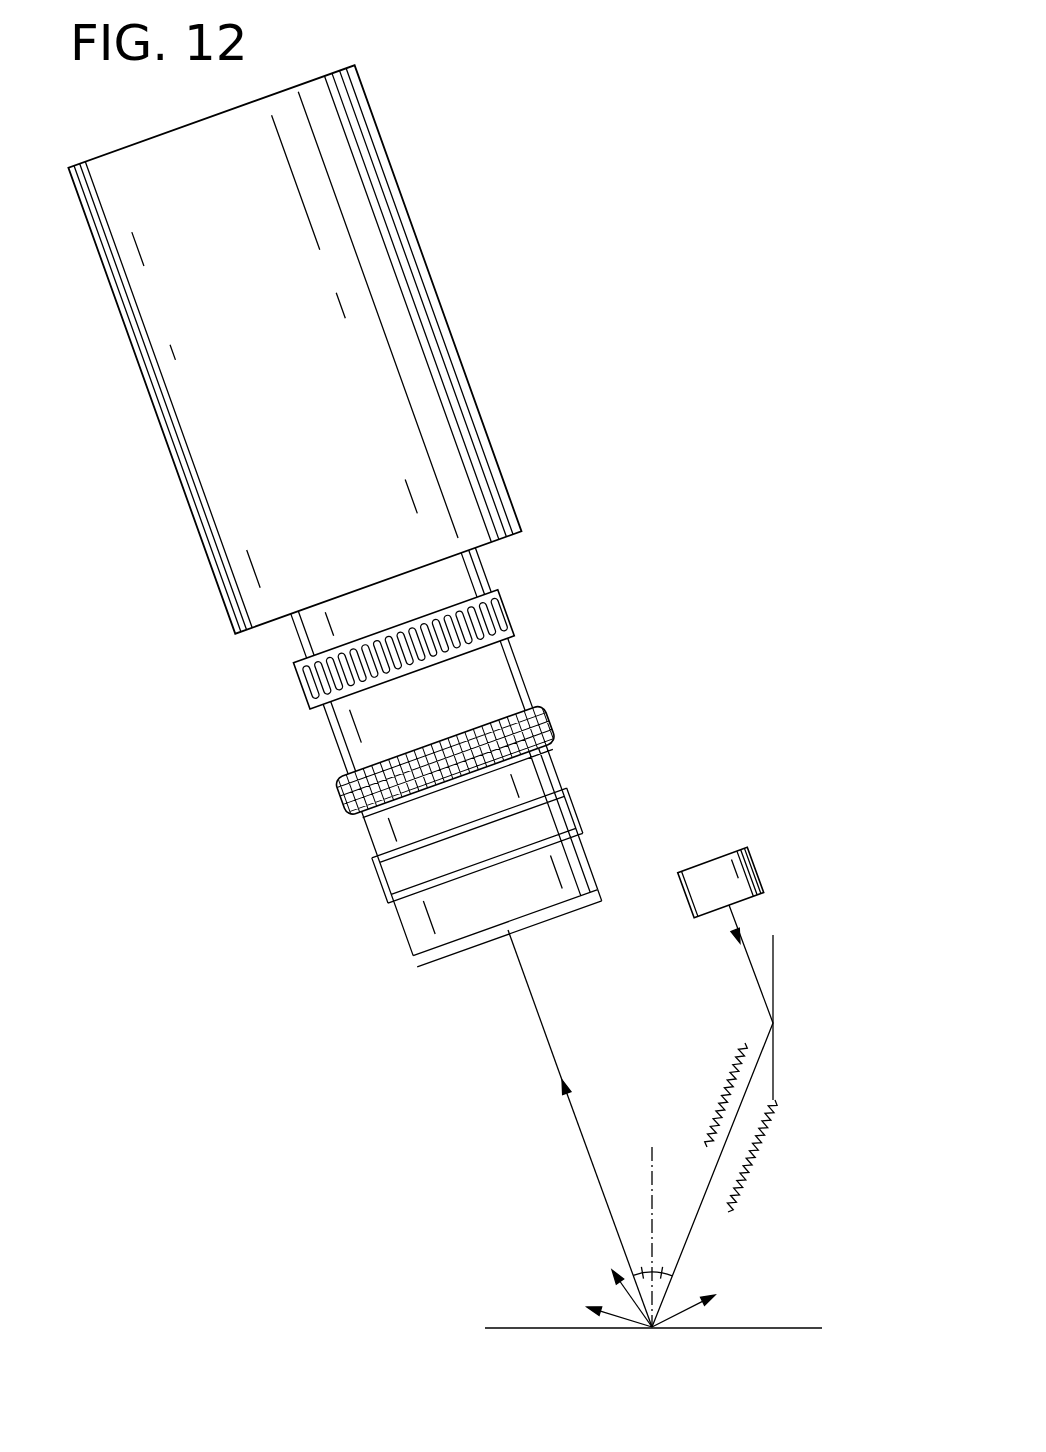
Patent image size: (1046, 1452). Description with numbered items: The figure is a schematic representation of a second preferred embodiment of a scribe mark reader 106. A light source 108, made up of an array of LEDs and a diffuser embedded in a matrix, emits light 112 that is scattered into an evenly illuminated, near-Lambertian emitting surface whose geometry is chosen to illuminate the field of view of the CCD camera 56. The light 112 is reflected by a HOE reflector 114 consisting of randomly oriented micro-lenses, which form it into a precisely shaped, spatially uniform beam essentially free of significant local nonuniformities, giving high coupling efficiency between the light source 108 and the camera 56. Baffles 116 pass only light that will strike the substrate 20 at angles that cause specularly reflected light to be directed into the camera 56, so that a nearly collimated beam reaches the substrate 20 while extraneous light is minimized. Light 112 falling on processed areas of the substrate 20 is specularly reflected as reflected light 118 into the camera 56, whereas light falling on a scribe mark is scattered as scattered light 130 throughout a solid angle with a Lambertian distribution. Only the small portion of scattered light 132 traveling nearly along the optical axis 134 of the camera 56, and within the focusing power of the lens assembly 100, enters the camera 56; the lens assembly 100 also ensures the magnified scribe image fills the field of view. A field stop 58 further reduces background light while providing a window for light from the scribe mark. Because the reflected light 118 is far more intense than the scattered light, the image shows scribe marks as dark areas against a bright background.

The substrate 20 is at (515, 1330).
The CCD camera 56 is at (400, 170).
The field stop 58 is at (573, 913).
The lens assembly 100 is at (358, 826).
The scribe mark reader 106 is at (223, 698).
The light source 108 is at (752, 860).
The light 112 is at (753, 972).
The HOE reflector 114 is at (775, 990).
The baffles 116 is at (728, 1090).
The reflected light 118 is at (578, 1128).
The scattered light 130 is at (690, 1311).
The scattered light 132 is at (625, 1292).
The optical axis 134 is at (540, 1012).